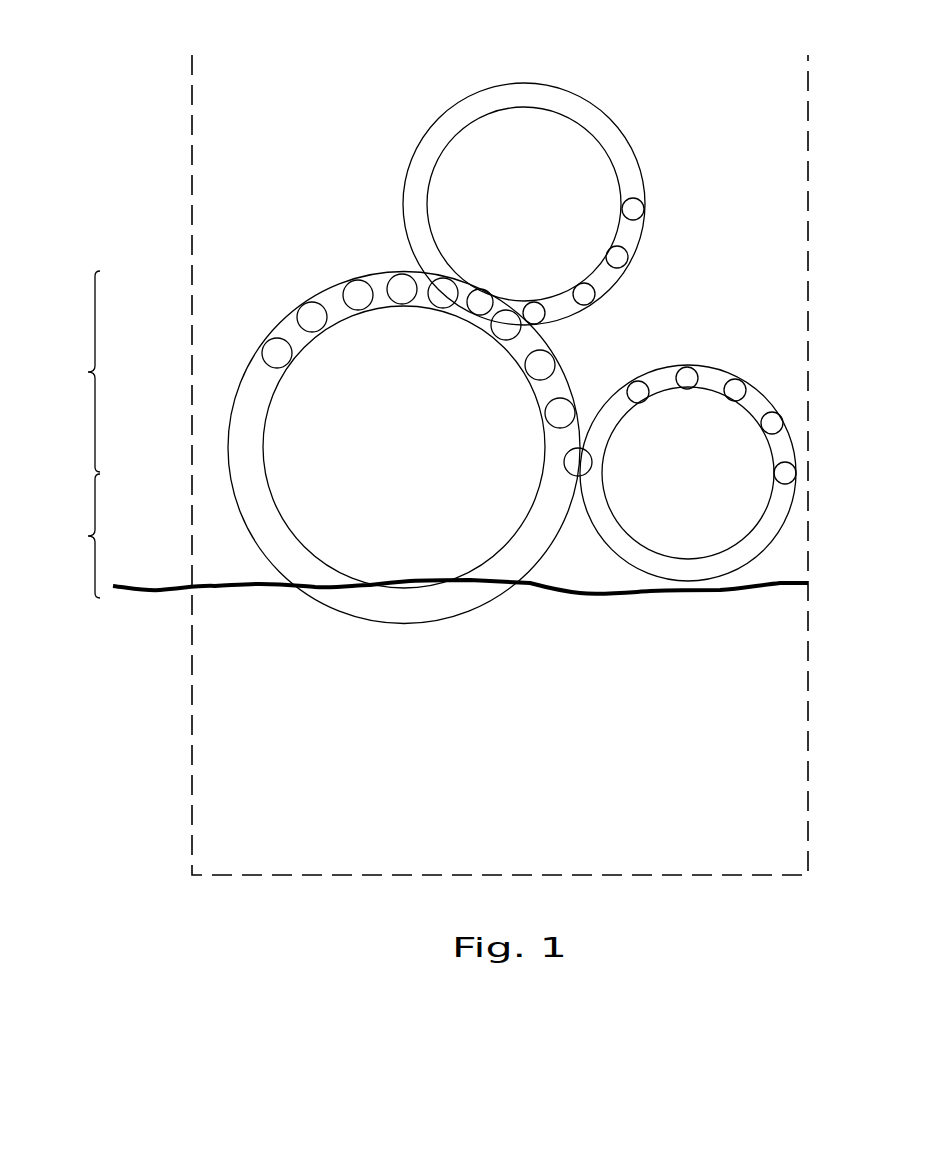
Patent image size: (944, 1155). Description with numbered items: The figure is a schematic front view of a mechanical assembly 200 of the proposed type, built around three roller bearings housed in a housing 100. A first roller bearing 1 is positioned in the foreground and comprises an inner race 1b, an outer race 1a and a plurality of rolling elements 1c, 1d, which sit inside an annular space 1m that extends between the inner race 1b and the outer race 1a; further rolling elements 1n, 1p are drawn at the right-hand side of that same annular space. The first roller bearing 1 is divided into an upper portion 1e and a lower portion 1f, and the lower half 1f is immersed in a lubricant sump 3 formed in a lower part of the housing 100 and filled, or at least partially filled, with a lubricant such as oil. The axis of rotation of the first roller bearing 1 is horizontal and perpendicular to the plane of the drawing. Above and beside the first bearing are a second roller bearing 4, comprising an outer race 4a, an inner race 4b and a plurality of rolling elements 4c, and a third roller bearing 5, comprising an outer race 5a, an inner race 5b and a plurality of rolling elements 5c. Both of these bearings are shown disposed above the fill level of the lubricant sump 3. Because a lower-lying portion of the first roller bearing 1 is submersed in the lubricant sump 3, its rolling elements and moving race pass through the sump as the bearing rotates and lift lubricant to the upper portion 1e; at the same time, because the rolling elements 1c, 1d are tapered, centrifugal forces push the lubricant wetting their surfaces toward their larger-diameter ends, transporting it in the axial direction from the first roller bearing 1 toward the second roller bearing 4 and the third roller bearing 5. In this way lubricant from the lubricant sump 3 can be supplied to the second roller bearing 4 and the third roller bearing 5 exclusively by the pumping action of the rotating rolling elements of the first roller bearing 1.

The first roller bearing 1 is at (348, 406).
The outer race 1a is at (228, 432).
The inner race 1b is at (270, 400).
The rolling element 1c is at (355, 280).
The rolling element 1d is at (400, 274).
The upper portion 1e is at (77, 371).
The lower portion 1f is at (82, 536).
The annular space 1m is at (565, 382).
The rolling ball 1n is at (474, 303).
The rolling ball 1p is at (565, 460).
The lubricant sump 3 is at (141, 570).
The second roller bearing 4 is at (567, 165).
The outer race 4a is at (524, 83).
The inner race 4b is at (545, 107).
The rolling elements 4c is at (640, 208).
The third roller bearing 5 is at (724, 469).
The outer race 5a is at (709, 368).
The inner race 5b is at (706, 392).
The rolling elements 5c is at (781, 410).
The housing 100 is at (191, 708).
The mechanical assembly 200 is at (122, 157).